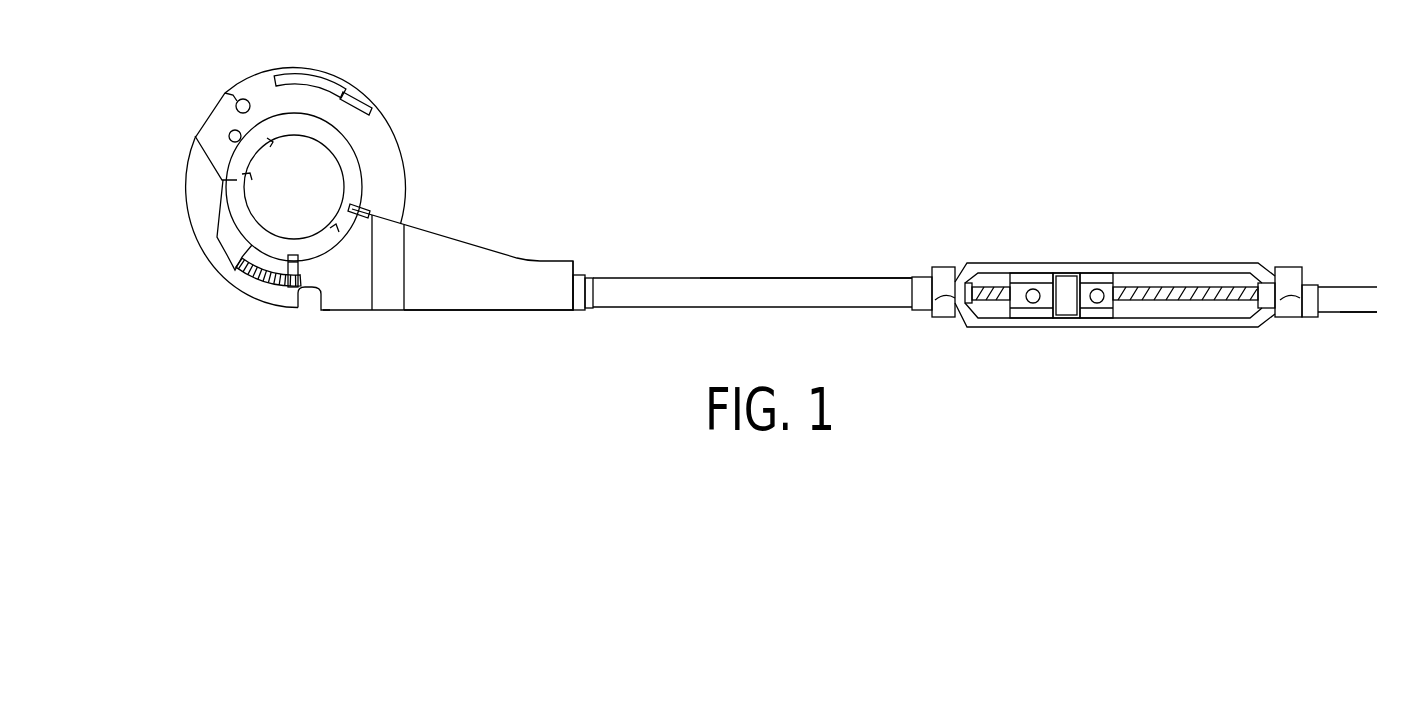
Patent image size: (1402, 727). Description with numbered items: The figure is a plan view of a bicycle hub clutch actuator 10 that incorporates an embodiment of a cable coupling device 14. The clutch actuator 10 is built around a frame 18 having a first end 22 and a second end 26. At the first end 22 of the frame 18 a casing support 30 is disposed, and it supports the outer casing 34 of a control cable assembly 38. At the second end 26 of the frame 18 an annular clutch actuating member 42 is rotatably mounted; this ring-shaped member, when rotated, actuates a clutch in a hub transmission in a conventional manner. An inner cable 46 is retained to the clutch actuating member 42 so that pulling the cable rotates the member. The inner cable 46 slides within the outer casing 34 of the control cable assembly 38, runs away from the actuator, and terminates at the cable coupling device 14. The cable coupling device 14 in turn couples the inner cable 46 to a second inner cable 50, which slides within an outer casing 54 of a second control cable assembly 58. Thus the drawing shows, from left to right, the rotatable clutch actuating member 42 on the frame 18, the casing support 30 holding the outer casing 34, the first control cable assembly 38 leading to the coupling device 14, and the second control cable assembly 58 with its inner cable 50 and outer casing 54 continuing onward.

The bicycle hub clutch actuator 10 is at (175, 113).
The cable coupling device 14 is at (1094, 198).
The frame 18 is at (427, 233).
The first end 22 is at (548, 302).
The second end 26 is at (328, 312).
The casing support 30 is at (579, 272).
The outer casing 34 is at (645, 285).
The control cable assembly 38 is at (704, 258).
The annular clutch actuating member 42 is at (217, 210).
The inner cable 46 is at (262, 290).
The inner cable 50 is at (1167, 287).
The outer casing 54 is at (1330, 293).
The control cable assembly 58 is at (1345, 336).